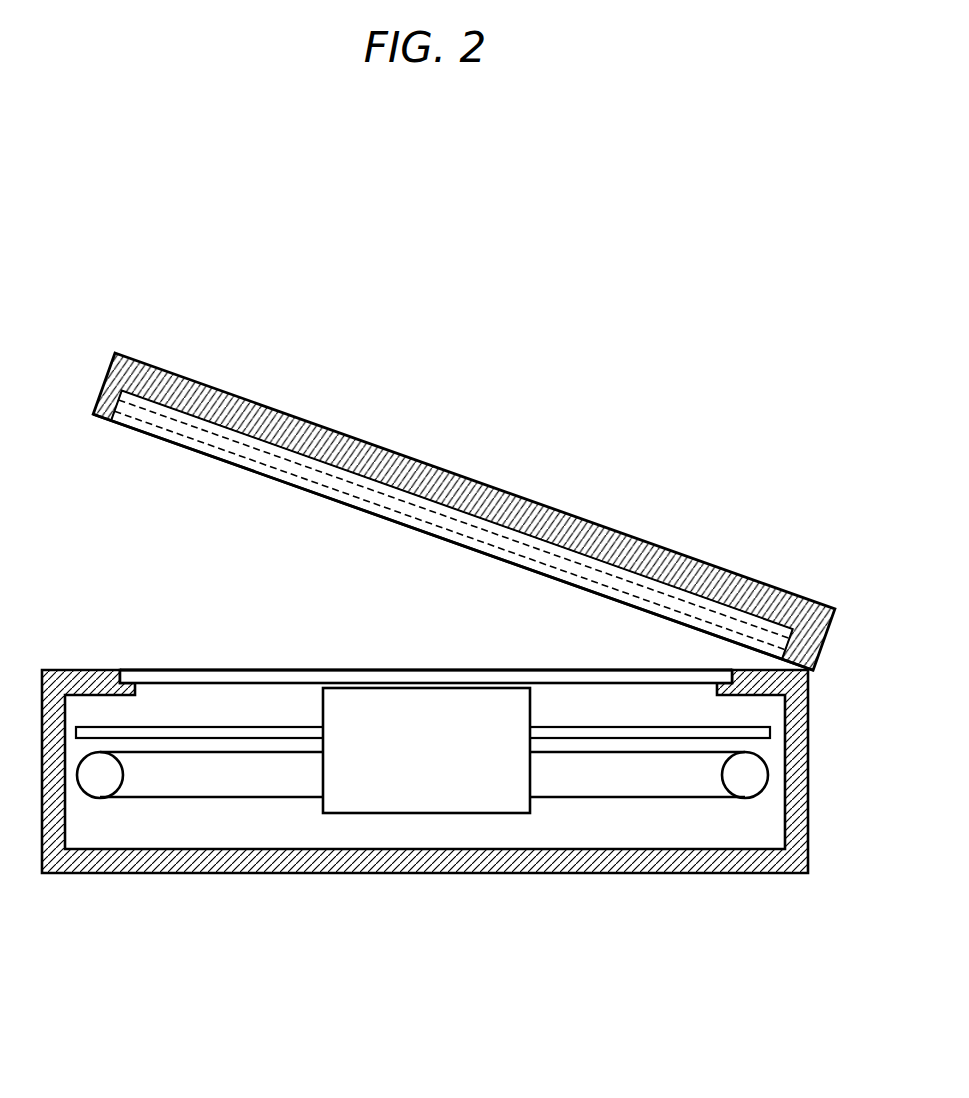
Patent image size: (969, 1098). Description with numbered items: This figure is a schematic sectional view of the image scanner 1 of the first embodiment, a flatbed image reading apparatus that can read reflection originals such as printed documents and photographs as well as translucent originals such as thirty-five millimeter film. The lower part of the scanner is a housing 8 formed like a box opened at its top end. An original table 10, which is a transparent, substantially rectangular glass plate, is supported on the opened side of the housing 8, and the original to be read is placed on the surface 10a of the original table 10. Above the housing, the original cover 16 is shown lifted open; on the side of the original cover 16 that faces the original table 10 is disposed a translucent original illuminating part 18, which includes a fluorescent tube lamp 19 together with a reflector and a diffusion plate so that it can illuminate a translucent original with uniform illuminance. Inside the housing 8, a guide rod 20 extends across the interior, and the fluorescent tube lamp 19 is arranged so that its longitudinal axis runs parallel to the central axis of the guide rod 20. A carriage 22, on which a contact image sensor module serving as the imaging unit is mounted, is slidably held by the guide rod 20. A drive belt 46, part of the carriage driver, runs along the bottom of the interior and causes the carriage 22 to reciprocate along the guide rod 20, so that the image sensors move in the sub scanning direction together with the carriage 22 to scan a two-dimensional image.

The image scanner 1 is at (750, 485).
The housing 8 is at (758, 874).
The original table 10 is at (127, 678).
The surface 10a is at (150, 660).
The original cover 16 is at (100, 388).
The translucent original illuminating part 18 is at (397, 516).
The fluorescent tube lamp 19 is at (248, 448).
The guide rod 20 is at (272, 733).
The carriage 22 is at (432, 814).
The drive belt 46 is at (578, 750).